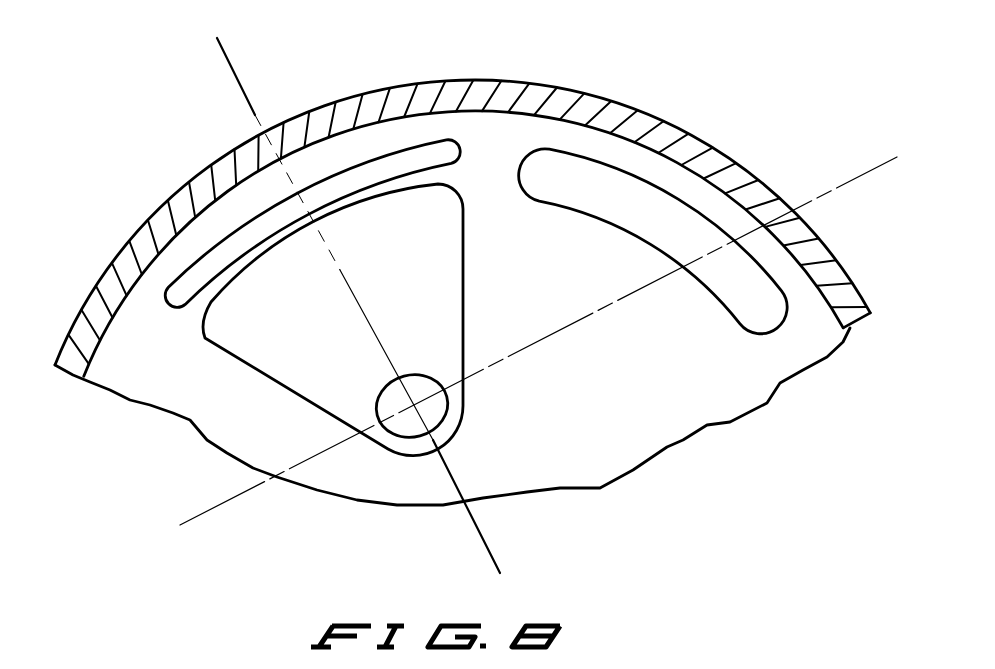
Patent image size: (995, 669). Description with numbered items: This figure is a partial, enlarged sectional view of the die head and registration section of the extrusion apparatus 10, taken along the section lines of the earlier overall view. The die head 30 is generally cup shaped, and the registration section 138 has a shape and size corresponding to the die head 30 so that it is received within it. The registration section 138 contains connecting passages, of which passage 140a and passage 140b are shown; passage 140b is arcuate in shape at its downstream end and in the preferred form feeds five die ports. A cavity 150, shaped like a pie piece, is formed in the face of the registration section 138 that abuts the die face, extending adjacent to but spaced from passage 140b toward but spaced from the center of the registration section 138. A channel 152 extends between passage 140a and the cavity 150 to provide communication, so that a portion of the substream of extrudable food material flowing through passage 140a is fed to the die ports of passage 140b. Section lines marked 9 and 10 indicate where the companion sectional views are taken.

The die head 30 is at (717, 170).
The registration section 138 is at (703, 395).
The passage 140a is at (600, 182).
The passage 140b is at (220, 255).
The cavity 150 is at (430, 403).
The channel 152 is at (250, 337).
The section line 9- 9 is at (887, 110).
The section line 10- 10 is at (563, 552).